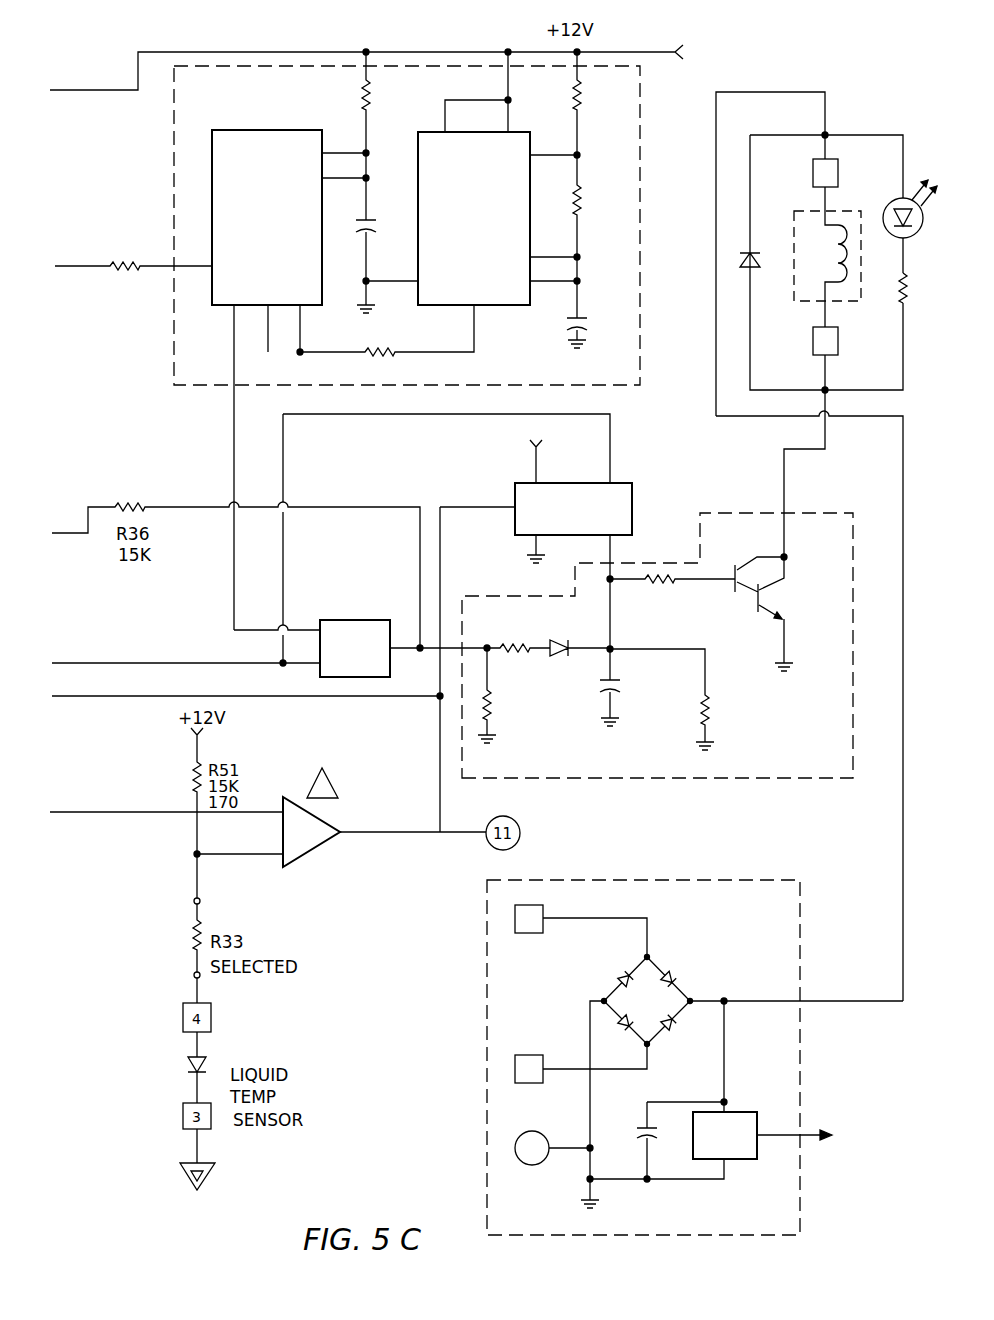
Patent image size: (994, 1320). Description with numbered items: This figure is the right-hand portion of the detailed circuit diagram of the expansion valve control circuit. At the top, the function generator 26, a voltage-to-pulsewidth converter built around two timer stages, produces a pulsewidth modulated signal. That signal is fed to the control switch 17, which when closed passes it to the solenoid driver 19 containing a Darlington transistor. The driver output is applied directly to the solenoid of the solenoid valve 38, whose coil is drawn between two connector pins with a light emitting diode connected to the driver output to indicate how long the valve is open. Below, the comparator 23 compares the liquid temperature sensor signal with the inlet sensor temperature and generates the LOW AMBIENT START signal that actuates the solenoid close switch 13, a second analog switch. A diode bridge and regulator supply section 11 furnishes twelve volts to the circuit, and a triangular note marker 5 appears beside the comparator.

The function generator 26 is at (172, 136).
The solenoid valve 38 is at (834, 546).
The control switch 17 is at (633, 490).
The solenoid driver 19 is at (800, 780).
The solenoid close switch 13 is at (360, 620).
The comparator 23 is at (288, 797).
The note triangle 5 is at (322, 784).
The power supply 11 is at (800, 1210).